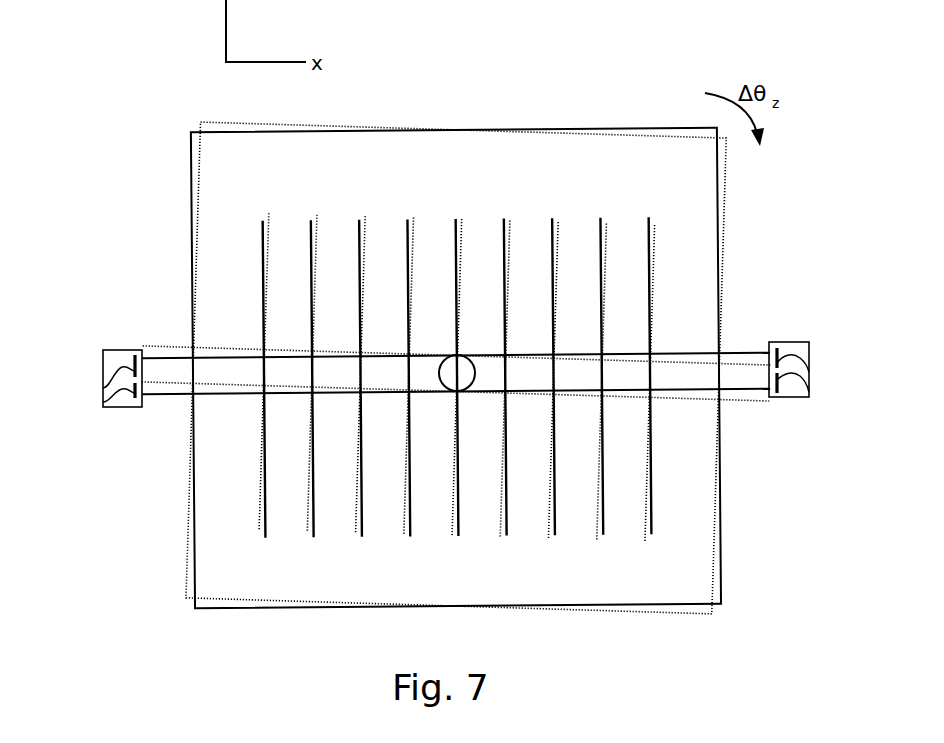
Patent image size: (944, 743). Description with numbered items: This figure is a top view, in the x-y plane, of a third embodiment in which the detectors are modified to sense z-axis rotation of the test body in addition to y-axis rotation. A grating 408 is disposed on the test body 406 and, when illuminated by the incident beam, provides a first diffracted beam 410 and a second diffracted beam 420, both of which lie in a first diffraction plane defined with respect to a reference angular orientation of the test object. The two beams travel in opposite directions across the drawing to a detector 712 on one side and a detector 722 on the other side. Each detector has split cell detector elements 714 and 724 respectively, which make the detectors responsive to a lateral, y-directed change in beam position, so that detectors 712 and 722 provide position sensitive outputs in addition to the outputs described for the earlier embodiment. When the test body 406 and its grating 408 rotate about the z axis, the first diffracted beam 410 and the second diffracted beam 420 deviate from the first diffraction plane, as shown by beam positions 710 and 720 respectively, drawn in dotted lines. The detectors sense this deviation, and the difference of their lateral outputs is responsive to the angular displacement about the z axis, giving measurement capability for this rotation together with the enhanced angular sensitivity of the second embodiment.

The test body 406 is at (192, 184).
The grating 408 is at (232, 267).
The first diffracted beam 410 is at (745, 352).
The second diffracted beam 420 is at (165, 396).
The beam position 710 is at (755, 399).
The beam position 720 is at (163, 345).
The detector 712 is at (810, 360).
The split cell detector elements 714 is at (810, 375).
The detector 722 is at (104, 372).
The split cell detector elements 724 is at (103, 397).